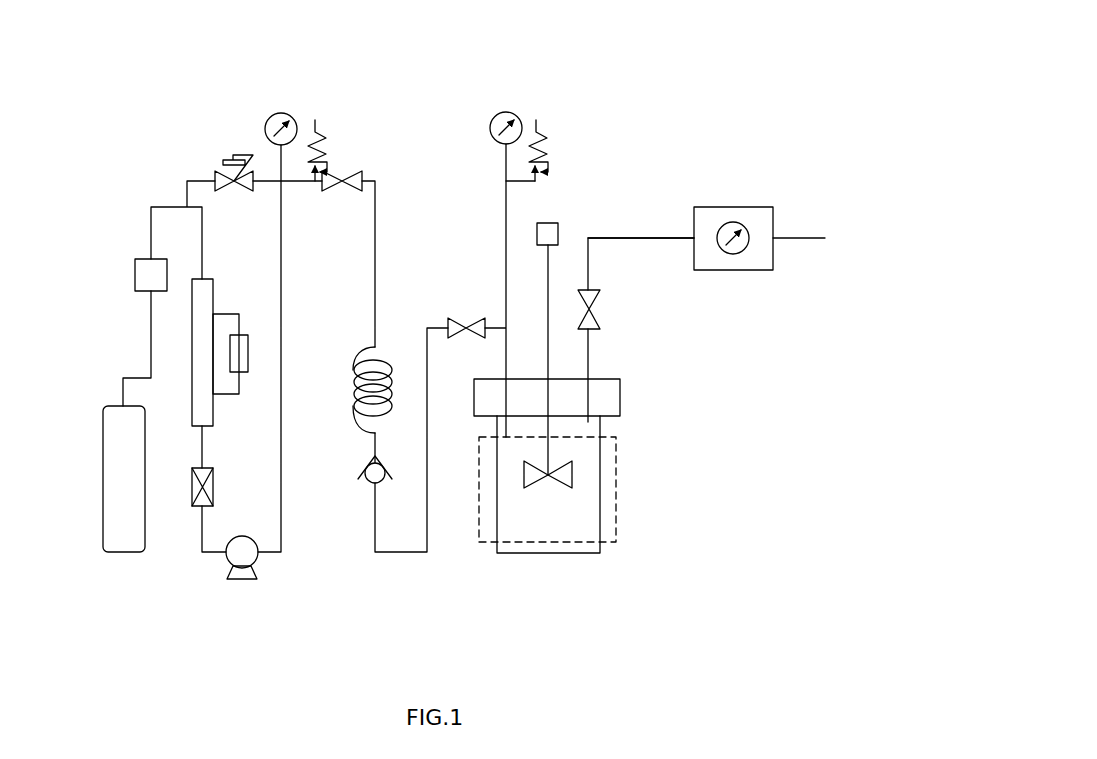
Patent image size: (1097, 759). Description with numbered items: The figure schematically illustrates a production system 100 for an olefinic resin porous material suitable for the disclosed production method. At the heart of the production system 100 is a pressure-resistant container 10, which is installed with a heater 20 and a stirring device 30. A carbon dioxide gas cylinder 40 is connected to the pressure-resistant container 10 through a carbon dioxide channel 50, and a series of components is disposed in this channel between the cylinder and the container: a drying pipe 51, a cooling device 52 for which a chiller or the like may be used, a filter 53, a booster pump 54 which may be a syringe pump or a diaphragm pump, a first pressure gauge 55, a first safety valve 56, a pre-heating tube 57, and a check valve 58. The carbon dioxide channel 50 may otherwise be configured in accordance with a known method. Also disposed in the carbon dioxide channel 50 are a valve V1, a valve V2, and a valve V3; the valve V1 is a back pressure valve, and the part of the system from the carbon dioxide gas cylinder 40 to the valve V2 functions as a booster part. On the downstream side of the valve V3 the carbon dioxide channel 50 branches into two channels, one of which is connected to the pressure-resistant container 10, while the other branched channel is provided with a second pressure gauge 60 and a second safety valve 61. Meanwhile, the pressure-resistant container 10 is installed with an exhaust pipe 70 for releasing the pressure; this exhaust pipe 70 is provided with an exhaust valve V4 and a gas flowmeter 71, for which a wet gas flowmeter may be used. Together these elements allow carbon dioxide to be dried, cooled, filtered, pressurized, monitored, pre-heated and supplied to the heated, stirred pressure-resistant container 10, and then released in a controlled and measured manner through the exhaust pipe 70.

The production system 100 is at (729, 38).
The pressure-resistant container 10 is at (601, 554).
The heater 20 is at (617, 486).
The stirring device 30 is at (558, 223).
The carbon dioxide gas cylinder 40 is at (131, 553).
The carbon dioxide channel 50 is at (151, 340).
The drying pipe 51 is at (135, 268).
The cooling device 52 is at (213, 415).
The filter 53 is at (213, 490).
The booster pump 54 is at (258, 574).
The first pressure gauge 55 is at (265, 120).
The first safety valve 56 is at (320, 118).
The pre-heating tube 57 is at (388, 358).
The check valve 58 is at (368, 482).
The second pressure gauge 60 is at (490, 120).
The second safety valve 61 is at (541, 118).
The exhaust pipe 70 is at (646, 238).
The gas flowmeter 71 is at (759, 271).
The valve V1 is at (236, 192).
The valve V2 is at (342, 192).
The valve V3 is at (467, 318).
The exhaust valve V4 is at (598, 318).